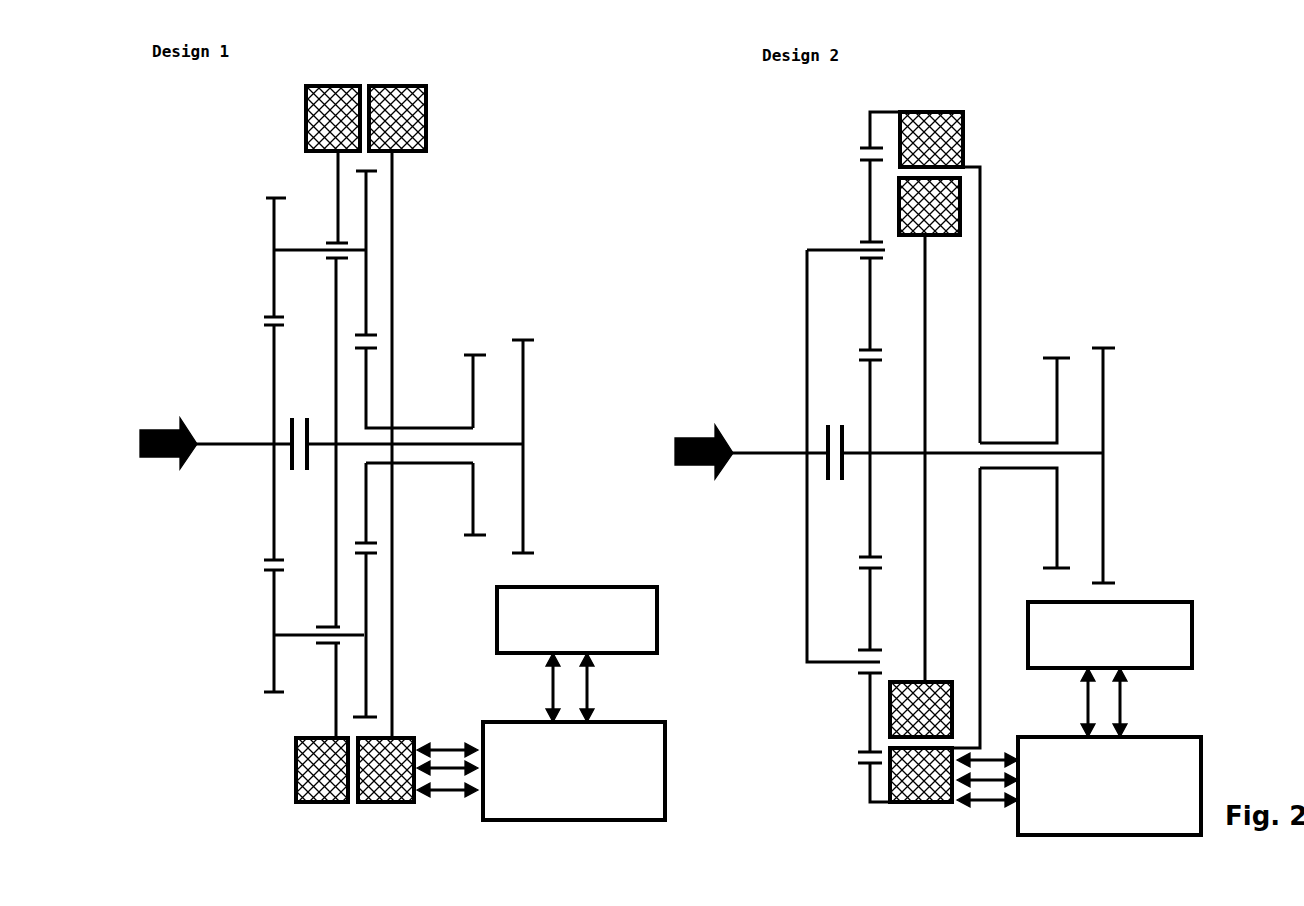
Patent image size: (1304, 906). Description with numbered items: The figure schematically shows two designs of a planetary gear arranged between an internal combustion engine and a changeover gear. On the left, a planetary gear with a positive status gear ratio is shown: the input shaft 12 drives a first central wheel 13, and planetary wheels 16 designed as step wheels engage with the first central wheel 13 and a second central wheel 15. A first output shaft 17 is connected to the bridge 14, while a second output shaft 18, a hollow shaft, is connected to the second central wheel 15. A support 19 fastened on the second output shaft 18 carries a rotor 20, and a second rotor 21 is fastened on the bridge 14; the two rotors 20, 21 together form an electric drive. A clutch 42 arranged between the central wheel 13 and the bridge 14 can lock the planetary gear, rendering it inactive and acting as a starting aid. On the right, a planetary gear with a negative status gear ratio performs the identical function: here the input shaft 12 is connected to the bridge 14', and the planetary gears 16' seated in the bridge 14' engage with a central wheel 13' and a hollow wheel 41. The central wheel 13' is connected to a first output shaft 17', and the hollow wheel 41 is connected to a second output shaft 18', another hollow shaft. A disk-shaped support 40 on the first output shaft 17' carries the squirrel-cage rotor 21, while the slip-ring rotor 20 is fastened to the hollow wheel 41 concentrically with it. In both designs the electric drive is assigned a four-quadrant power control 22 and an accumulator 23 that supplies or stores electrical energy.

The input shaft 12 is at (227, 440).
The first central wheel 13 is at (255, 508).
The bridge 14 is at (319, 476).
The second central wheel 15 is at (367, 380).
The planetary wheels 16 is at (294, 254).
The first output shaft 17 is at (453, 397).
The second output shaft 18 is at (457, 497).
The support 19 is at (393, 247).
The rotor 20 is at (408, 120).
The second rotor 21 is at (342, 117).
The power control 22 is at (809, 778).
The accumulator 23 is at (844, 662).
The disk-shaped support 40 is at (928, 350).
The hollow wheel 41 is at (880, 108).
The clutch 42 is at (307, 472).
The central wheel 13' is at (856, 530).
The bridge 14' is at (820, 456).
The planetary gears 16' is at (822, 209).
The first output shaft 17' is at (1025, 405).
The second output shaft 18' is at (1025, 518).